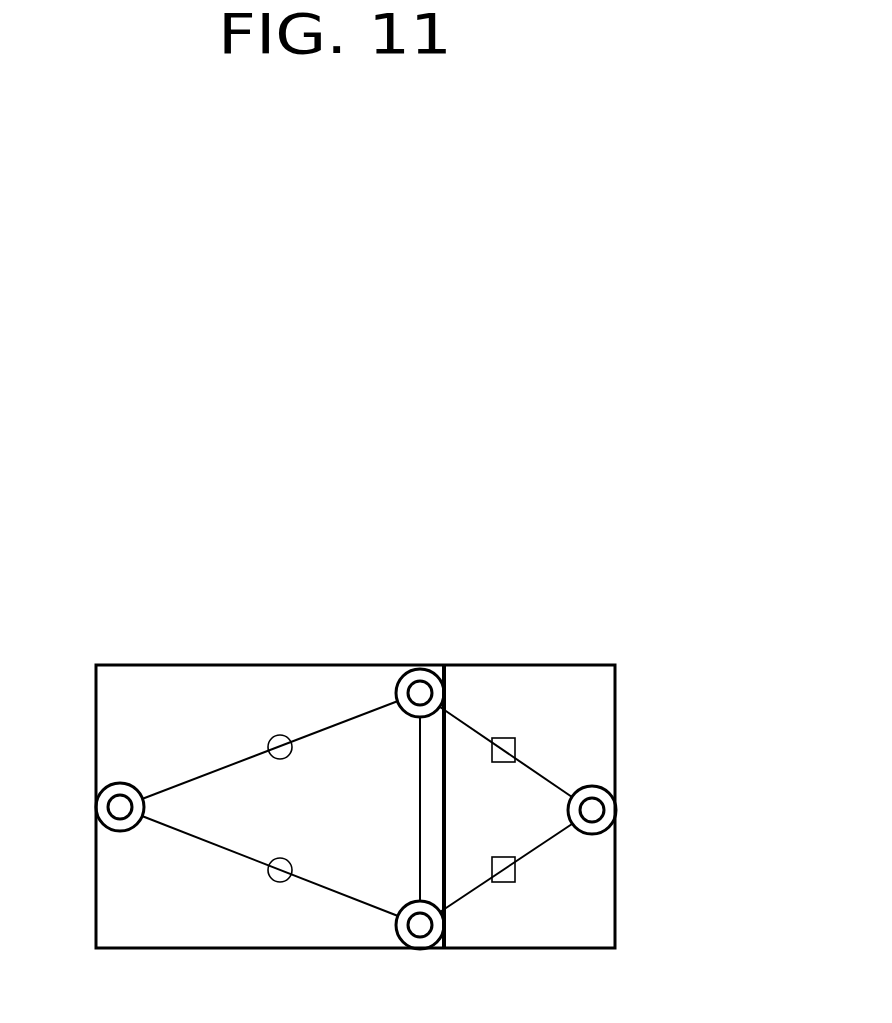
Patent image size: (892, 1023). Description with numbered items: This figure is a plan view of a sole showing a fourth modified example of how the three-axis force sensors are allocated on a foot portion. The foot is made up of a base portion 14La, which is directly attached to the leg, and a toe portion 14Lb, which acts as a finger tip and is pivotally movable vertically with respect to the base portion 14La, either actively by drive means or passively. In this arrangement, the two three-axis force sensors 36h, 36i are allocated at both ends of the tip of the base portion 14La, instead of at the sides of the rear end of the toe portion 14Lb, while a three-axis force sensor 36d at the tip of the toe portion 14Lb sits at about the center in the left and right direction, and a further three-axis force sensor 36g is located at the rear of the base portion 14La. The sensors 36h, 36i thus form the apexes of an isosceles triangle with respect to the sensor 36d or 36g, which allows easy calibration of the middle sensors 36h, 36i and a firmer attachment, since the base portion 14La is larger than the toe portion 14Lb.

The base portion 14La is at (240, 628).
The toe portion 14Lb is at (558, 702).
The 3-axis force sensor 36g is at (120, 820).
The 3-axis force sensor 36h is at (408, 692).
The 3-axis force sensor 36i is at (413, 935).
The 3-axis force sensor 36d is at (590, 789).